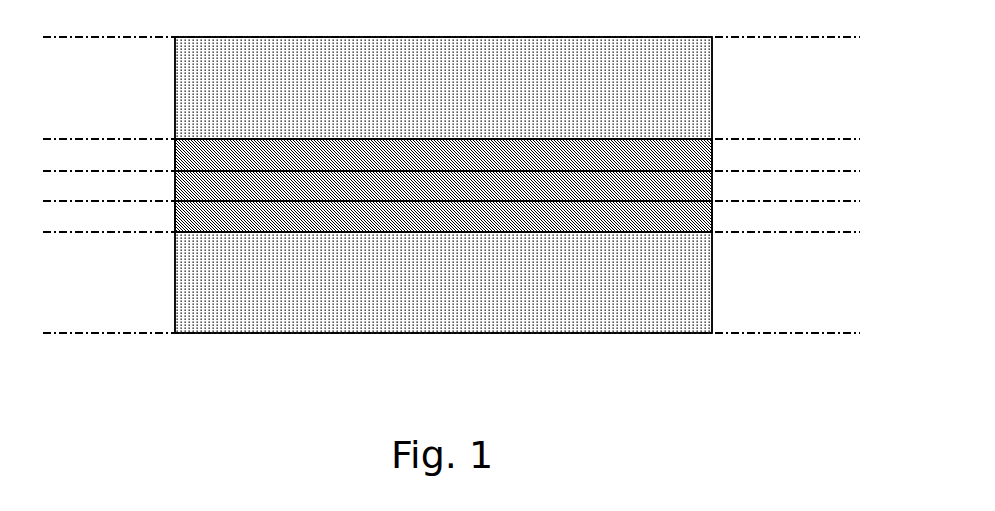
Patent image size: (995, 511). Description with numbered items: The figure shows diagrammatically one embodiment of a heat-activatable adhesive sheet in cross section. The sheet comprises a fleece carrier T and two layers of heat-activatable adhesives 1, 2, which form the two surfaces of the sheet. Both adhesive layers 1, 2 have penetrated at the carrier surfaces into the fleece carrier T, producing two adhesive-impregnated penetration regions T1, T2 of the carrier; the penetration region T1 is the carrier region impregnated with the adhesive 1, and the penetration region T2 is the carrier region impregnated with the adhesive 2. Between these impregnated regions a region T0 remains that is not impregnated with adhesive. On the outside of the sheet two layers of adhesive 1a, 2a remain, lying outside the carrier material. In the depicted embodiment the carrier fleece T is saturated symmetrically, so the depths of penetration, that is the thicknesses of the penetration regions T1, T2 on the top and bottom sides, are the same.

The layer of heat-activatable adhesive 1 is at (93, 171).
The layer of heat-activatable adhesive 2 is at (93, 201).
The layer of adhesive 1a is at (753, 37).
The layer of adhesive 2a is at (753, 232).
The fleece carrier T is at (144, 139).
The region not impregnated with adhesive T0 is at (775, 162).
The penetration region T1 is at (775, 130).
The penetration region T2 is at (775, 192).